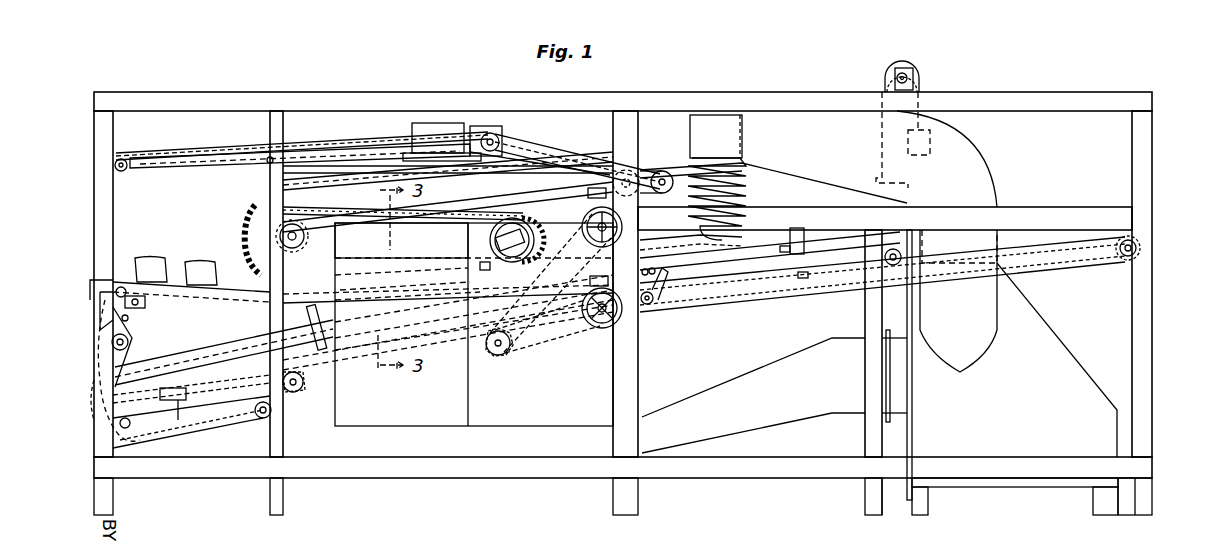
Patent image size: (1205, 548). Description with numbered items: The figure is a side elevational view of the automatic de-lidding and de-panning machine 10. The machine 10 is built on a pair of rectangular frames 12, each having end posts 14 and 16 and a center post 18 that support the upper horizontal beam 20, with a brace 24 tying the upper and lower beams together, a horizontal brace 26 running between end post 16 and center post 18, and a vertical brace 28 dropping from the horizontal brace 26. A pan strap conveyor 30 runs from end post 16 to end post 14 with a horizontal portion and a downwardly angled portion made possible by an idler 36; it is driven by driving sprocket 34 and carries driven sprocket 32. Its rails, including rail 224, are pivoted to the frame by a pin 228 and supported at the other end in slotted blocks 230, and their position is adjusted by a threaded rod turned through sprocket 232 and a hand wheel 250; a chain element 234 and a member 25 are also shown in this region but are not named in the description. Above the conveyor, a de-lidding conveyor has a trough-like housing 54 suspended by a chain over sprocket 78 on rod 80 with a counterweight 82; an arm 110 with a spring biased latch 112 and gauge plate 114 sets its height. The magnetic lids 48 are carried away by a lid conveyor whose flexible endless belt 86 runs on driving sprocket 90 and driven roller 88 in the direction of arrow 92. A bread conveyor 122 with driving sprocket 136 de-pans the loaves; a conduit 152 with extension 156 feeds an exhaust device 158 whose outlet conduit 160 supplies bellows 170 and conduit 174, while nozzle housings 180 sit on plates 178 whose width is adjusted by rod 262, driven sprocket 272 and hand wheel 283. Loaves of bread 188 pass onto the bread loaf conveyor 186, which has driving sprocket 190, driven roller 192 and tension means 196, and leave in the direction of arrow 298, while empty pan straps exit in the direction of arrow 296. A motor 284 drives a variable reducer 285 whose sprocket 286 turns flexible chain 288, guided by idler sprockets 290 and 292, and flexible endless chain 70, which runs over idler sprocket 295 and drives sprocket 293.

The machine 10 is at (728, 92).
The rectangular frame 12 is at (1138, 130).
The end post 14 is at (105, 145).
The end post 16 is at (1143, 398).
The center post 18 is at (634, 380).
The upper horizontal beam 20 is at (347, 103).
The brace 24 is at (277, 452).
The inclined bar 25 is at (395, 173).
The horizontal brace 26 is at (1057, 213).
The vertical brace 28 is at (868, 303).
The conveyor 30 is at (712, 295).
The driven sprocket 32 is at (1138, 245).
The driving sprocket 34 is at (110, 425).
The idler 36 is at (885, 258).
The lid 48 is at (200, 155).
The trough-like housing 54 is at (805, 186).
The flexible endless chain 70 is at (560, 152).
The sprocket 78 is at (918, 74).
The rod 80 is at (905, 76).
The counterweight 82 is at (922, 143).
The flexible endless belt 86 is at (535, 207).
The driven roller 88 is at (695, 240).
The driving sprocket 90 is at (122, 171).
The arrow 92 is at (130, 141).
The arm 110 is at (665, 300).
The spring biased latch 112 is at (662, 268).
The gauge plate 114 is at (664, 312).
The bread conveyor 122 is at (262, 230).
The driving sprocket 136 is at (296, 252).
The conduit 152 is at (460, 405).
The extension 156 is at (732, 392).
The exhaust device 158 is at (1045, 343).
The outlet conduit 160 is at (975, 162).
The bellows 170 is at (742, 186).
The conduit 174 is at (735, 248).
The plate 178 is at (220, 350).
The nozzle housing 180 is at (485, 270).
The bread loaf conveyor 186 is at (165, 290).
The loaf of bread 188 is at (150, 265).
The driving sprocket 190 is at (118, 268).
The driven roller 192 is at (350, 300).
The tension means 196 is at (160, 283).
The rail 224 is at (200, 392).
The pin 228 is at (795, 262).
The slotted block 230 is at (178, 420).
The sprocket 232 is at (505, 352).
The chain 234 is at (540, 325).
The hand wheel 250 is at (595, 227).
The rod 262 is at (330, 385).
The driven sprocket 272 is at (295, 392).
The hand wheel 283 is at (600, 330).
The motor 284 is at (440, 150).
The variable reducer 285 is at (504, 137).
The sprocket 286 is at (490, 133).
The flexible chain 288 is at (327, 142).
The idler sprocket 290 is at (108, 345).
The idler sprocket 292 is at (260, 418).
The sprocket 293 is at (626, 170).
The idler sprocket 295 is at (662, 170).
The arrow 296 is at (72, 405).
The arrow 298 is at (72, 260).